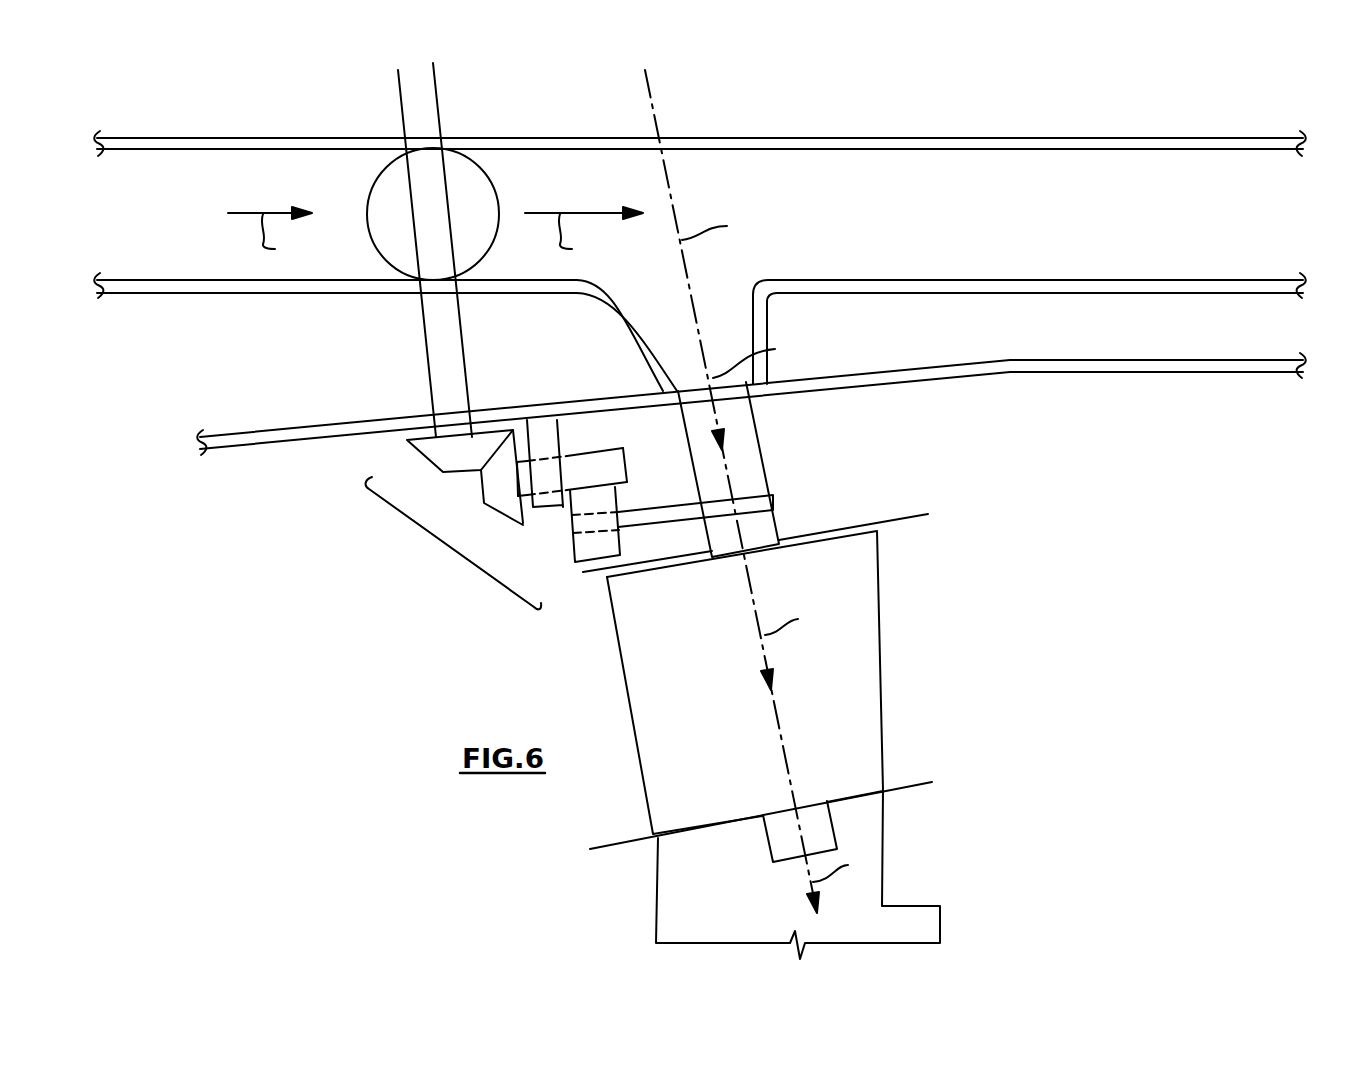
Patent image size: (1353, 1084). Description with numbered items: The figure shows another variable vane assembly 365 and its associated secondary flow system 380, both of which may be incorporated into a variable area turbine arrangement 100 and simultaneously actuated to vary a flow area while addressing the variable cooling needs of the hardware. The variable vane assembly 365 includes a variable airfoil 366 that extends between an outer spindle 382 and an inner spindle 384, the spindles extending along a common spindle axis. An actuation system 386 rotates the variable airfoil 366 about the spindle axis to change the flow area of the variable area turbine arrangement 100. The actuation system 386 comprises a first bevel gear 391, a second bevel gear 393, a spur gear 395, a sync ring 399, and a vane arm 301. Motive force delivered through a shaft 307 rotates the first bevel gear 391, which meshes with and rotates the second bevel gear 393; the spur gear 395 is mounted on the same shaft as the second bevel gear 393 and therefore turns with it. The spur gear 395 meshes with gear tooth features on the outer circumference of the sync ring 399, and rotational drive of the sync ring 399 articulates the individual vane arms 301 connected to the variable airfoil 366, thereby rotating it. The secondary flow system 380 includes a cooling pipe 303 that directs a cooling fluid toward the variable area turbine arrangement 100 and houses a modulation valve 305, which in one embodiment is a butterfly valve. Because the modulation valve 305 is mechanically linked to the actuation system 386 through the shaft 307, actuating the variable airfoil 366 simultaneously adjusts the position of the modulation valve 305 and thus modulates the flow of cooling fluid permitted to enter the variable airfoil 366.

The variable area turbine arrangement 100 is at (773, 120).
The cooling pipe 303 is at (944, 138).
The modulation valve 305 is at (480, 178).
The shaft 307 is at (464, 360).
The secondary flow system 380 is at (781, 309).
The outer spindle 382 is at (762, 458).
The inner spindle 384 is at (837, 832).
The variable airfoil 366 is at (882, 607).
The variable vane assembly 365 is at (493, 673).
The actuation system 386 is at (447, 549).
The first bevel gear 391 is at (433, 458).
The second bevel gear 393 is at (503, 511).
The spur gear 395 is at (610, 447).
The sync ring 399 is at (618, 498).
The vane arm 301 is at (648, 523).